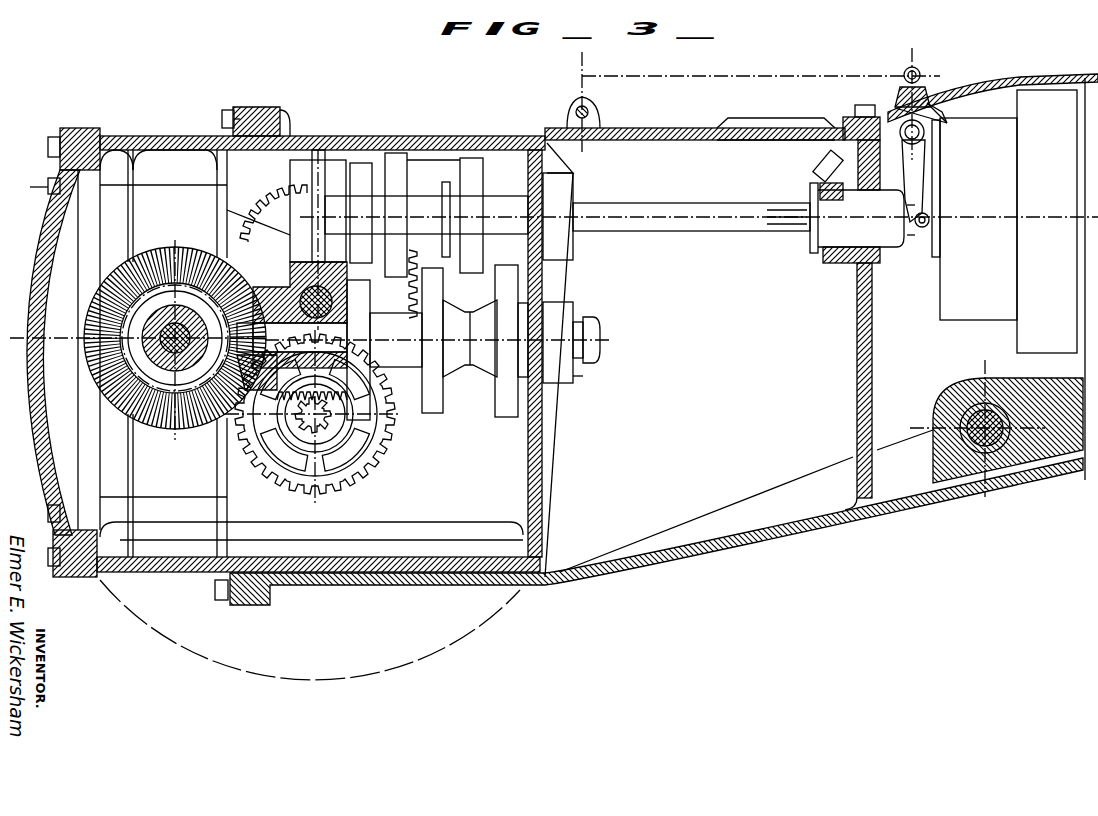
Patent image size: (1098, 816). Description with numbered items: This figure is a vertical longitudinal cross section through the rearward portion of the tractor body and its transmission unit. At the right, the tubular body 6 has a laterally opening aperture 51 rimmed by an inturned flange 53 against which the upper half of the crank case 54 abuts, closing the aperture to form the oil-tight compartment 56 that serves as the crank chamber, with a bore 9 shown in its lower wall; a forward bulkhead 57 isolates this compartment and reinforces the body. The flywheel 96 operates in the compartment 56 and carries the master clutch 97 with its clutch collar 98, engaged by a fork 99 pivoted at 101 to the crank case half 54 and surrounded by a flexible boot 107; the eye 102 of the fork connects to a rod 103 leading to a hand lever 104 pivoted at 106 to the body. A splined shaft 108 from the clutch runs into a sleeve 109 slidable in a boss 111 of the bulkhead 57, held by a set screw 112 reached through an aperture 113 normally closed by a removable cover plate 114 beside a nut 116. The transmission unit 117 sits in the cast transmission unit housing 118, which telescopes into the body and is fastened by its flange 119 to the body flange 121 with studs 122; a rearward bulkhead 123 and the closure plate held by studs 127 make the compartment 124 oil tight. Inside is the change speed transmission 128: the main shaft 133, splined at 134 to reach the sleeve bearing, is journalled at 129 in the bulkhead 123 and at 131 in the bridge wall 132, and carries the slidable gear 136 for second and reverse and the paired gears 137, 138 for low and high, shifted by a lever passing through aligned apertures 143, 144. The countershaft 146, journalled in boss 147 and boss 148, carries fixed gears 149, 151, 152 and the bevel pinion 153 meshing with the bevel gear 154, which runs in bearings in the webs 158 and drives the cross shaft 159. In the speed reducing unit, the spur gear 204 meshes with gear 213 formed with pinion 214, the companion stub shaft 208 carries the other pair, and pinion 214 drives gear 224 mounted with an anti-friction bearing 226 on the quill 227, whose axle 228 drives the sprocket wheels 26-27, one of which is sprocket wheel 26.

The studs 127 is at (48, 145).
The sprocket wheel 26 is at (36, 284).
The flange 119 is at (247, 107).
The flange 121 is at (278, 112).
The studs 122 is at (222, 119).
The transmission unit housing 118 is at (345, 575).
The tubular body 6 is at (742, 535).
The rearward bulkhead 123 is at (549, 467).
The compartment 124 is at (321, 519).
The pivot 106 is at (595, 110).
The hand lever 104 is at (585, 62).
The rod 103 is at (742, 78).
The removable cover plate 114 is at (762, 111).
The aperture 113 is at (746, 141).
The nut 116 is at (855, 114).
The set screw 112 is at (818, 163).
The forward bulkhead 57 is at (857, 378).
The main shaft 133 is at (500, 203).
The splines 134 is at (786, 226).
The boss 111 is at (815, 258).
The sleeve 109 is at (860, 240).
The splined shaft 108 is at (910, 228).
The clutch collar 98 is at (922, 240).
The flexible boot 107 is at (900, 96).
The eye 102 is at (904, 74).
The fork 99 is at (918, 165).
The aperture 51 is at (925, 133).
The inturned flange 53 is at (940, 150).
The pivot 101 is at (942, 112).
The upper half of the crank case 54 is at (1036, 77).
The master clutch 97 is at (978, 219).
The flywheel 96 is at (1051, 279).
The compartment 56 is at (1008, 413).
The bore 9 is at (1003, 447).
The spur gear 204 is at (150, 253).
The bevel gear 154 is at (190, 257).
The cross shaft 159 is at (174, 345).
The bevel pinion 153 is at (263, 303).
The stub shaft 208 is at (347, 293).
The pinion 214 is at (313, 290).
The gear 213 is at (233, 225).
The bridge wall 132 is at (288, 180).
The journal 131 is at (330, 193).
The gear 138 is at (363, 165).
The gear 137 is at (397, 157).
The aperture 143 is at (428, 135).
The aperture 144 is at (440, 143).
The slidable gear 136 is at (467, 160).
The boss 148 is at (277, 378).
The gear 151 is at (427, 405).
The gear 149 is at (362, 415).
The gear 152 is at (503, 418).
The transmission unit 117 is at (405, 395).
The journal 129 is at (568, 187).
The change speed transmission 128 is at (568, 282).
The shaft 146 is at (602, 340).
The boss 147 is at (585, 376).
The gear 224 is at (262, 470).
The anti-friction bearing 226 is at (290, 447).
The axle 228 is at (298, 408).
The quill 227 is at (333, 435).
The webs 158 is at (218, 493).
The sprocket wheels 26-27 is at (485, 623).